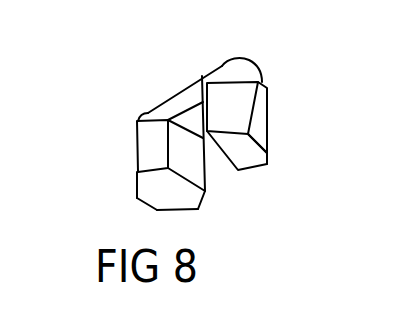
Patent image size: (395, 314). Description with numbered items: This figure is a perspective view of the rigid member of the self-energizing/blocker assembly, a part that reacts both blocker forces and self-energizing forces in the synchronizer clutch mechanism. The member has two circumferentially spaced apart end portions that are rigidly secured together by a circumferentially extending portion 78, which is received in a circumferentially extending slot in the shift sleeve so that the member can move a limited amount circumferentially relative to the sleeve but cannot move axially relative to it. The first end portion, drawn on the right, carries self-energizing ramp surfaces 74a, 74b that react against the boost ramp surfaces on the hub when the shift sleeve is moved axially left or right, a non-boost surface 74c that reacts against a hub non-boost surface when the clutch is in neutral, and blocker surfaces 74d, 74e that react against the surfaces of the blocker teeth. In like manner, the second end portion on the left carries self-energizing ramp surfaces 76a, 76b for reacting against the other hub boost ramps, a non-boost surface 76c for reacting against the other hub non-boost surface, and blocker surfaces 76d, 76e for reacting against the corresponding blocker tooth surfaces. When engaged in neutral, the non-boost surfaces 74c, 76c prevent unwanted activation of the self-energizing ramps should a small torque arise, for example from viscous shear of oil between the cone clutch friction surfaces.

The circumferentially extending portion 78 is at (182, 87).
The blocker surface 74e is at (221, 68).
The self-energizing ramp surface 74b is at (238, 97).
The non-boost surface 74c is at (268, 119).
The self-energizing ramp surface 74a is at (268, 147).
The blocker surface 74d is at (262, 168).
The blocker surface 76e is at (147, 133).
The self-energizing ramp surface 76b is at (138, 185).
The non-boost surface 76c is at (140, 208).
The self-energizing ramp surface 76a is at (165, 212).
The blocker surface 76d is at (203, 208).